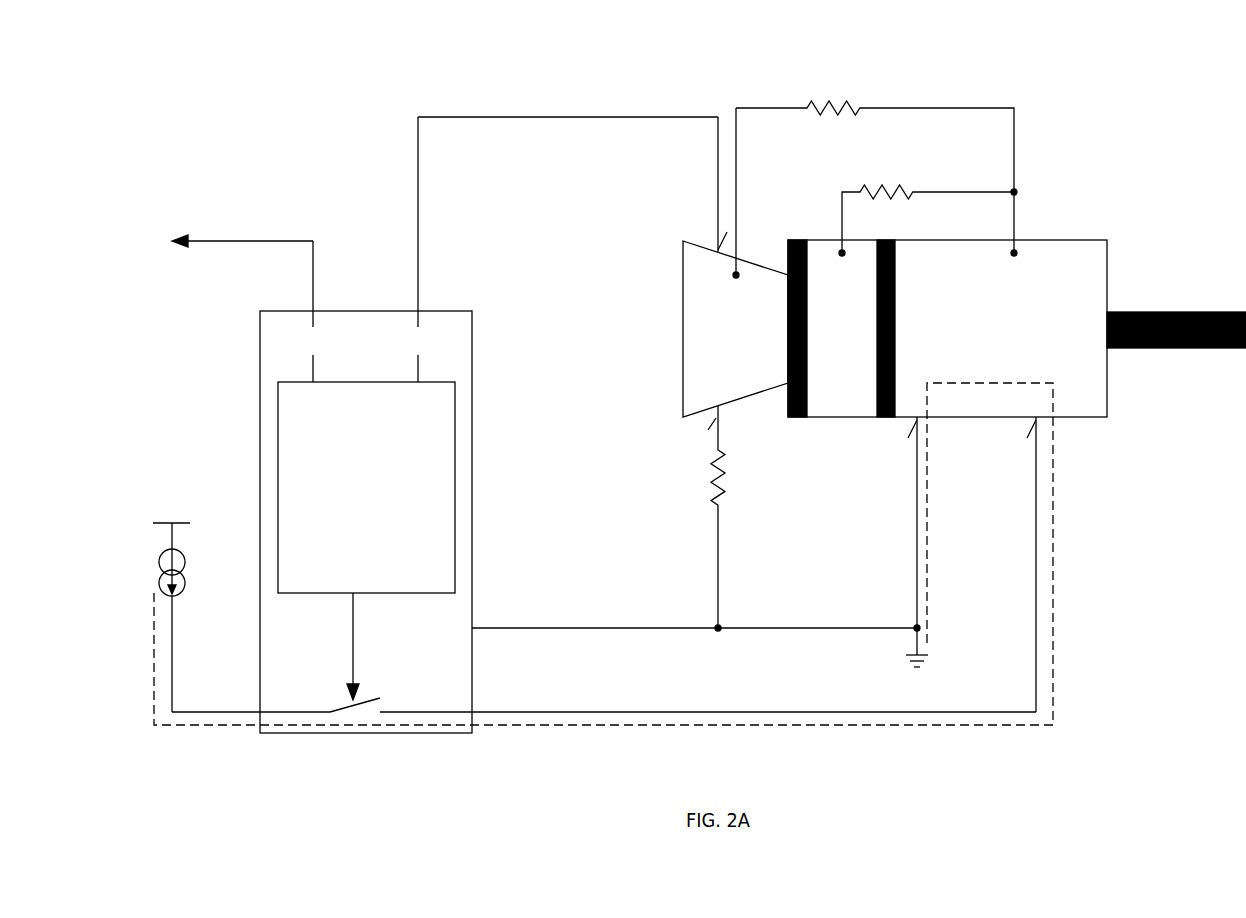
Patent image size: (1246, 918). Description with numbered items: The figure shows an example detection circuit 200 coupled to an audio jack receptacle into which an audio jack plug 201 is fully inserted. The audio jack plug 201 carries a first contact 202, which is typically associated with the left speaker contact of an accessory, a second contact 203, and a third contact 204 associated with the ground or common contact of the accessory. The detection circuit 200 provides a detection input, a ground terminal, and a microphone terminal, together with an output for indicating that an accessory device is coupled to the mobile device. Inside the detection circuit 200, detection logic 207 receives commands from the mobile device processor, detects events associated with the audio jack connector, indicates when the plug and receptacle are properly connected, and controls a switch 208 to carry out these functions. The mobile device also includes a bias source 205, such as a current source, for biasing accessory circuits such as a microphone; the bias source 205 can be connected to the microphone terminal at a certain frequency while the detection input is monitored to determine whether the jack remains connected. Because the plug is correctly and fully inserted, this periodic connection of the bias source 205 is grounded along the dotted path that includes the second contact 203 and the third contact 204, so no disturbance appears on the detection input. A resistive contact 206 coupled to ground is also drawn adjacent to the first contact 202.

The detection circuit 200 is at (462, 285).
The audio jack plug 201 is at (1083, 240).
The first contact 202 is at (743, 205).
The second contact 203 is at (917, 483).
The third contact 204 is at (1036, 553).
The bias source 205 is at (158, 560).
The resistive contact 206 is at (715, 440).
The detection logic 207 is at (350, 529).
The switch 208 is at (347, 713).